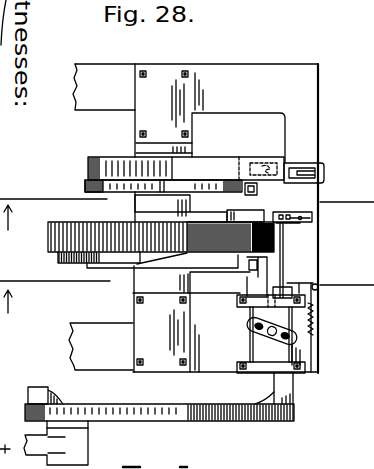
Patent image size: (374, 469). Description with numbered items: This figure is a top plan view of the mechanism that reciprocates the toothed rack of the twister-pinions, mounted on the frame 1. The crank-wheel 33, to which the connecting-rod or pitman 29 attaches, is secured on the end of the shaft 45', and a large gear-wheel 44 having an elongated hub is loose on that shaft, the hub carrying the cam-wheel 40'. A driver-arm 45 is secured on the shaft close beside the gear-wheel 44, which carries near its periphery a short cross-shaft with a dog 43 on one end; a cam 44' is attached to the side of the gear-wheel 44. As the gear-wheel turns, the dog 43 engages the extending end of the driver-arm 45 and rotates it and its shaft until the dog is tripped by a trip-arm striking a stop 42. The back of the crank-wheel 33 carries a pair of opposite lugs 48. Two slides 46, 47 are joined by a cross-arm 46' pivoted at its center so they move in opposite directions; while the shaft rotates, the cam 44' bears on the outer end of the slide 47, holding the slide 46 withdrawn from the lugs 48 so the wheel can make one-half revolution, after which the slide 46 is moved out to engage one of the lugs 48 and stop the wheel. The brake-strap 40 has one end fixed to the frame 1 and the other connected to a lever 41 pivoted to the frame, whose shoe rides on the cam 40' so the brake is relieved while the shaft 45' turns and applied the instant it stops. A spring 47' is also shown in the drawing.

The frame 1 is at (193, 218).
The brake-strap 40 is at (204, 174).
The cam-wheel 40' is at (74, 183).
The lever 41 is at (257, 189).
The stop 42 is at (312, 218).
The dog 43 is at (250, 217).
The gear-wheel 44 is at (147, 237).
The cam 44' is at (81, 258).
The driver-arm 45 is at (162, 261).
The shaft 45' is at (181, 208).
The slide 46 is at (271, 349).
The cross-arm 46' is at (259, 331).
The slide 47 is at (249, 260).
The spring 47' is at (327, 327).
The lugs 48 is at (60, 392).
The connecting-rod 29 is at (80, 445).
The crank-wheel 33 is at (159, 424).